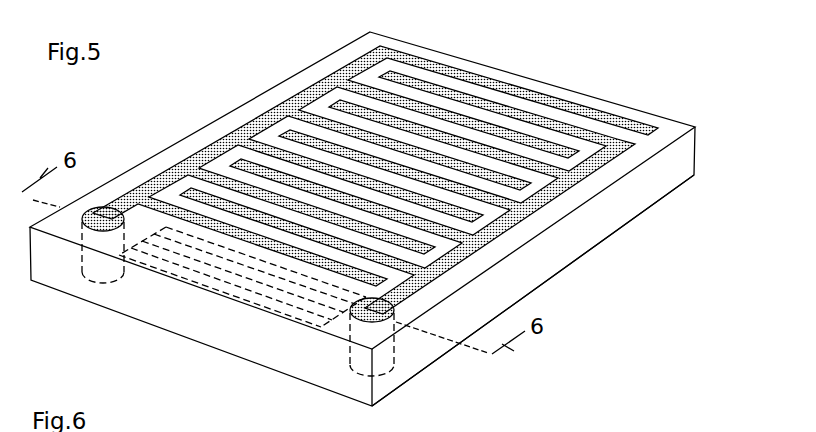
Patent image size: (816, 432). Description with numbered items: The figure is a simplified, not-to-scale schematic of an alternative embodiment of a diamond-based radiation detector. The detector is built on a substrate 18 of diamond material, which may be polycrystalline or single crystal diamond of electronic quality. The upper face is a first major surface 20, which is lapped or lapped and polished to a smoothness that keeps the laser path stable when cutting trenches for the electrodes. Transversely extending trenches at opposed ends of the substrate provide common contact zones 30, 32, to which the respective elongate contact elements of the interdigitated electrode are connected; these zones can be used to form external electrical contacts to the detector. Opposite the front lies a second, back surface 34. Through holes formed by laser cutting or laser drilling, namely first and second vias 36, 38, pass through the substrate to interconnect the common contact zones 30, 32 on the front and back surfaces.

The substrate 18 is at (634, 200).
The first major surface 20 is at (507, 70).
The common contact zone 30 is at (221, 140).
The common contact zone 32 is at (561, 217).
The back surface 34 is at (554, 276).
The first via 36 is at (105, 206).
The second via 38 is at (352, 301).